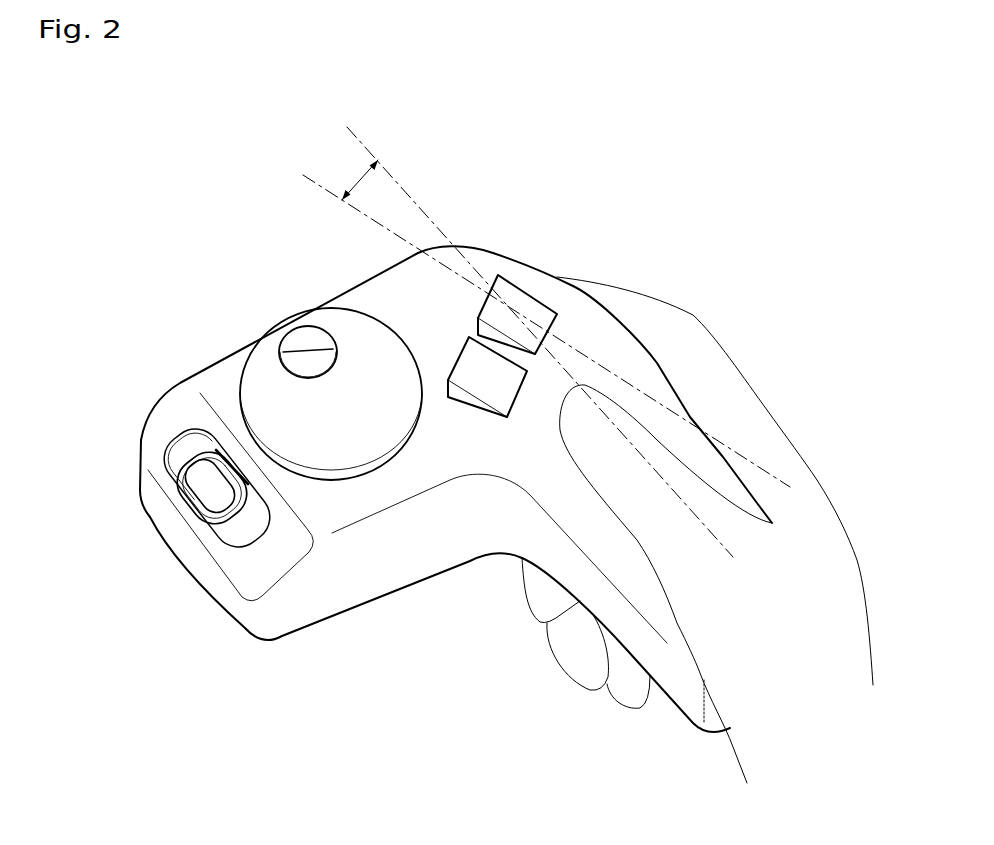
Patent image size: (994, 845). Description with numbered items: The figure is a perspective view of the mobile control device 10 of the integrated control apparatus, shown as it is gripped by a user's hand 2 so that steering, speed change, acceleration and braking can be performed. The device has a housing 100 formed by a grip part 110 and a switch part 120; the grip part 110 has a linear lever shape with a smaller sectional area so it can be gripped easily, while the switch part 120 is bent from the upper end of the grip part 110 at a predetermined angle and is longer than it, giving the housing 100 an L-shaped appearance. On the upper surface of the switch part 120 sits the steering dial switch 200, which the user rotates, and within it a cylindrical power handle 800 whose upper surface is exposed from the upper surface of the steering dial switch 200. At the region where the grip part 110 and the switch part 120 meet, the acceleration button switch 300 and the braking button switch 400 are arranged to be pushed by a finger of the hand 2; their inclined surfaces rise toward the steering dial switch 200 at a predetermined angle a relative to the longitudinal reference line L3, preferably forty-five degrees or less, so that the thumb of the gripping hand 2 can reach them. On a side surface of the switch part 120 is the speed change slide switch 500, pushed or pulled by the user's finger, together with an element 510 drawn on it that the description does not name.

The user's hand 2 is at (828, 527).
The mobile control device 10 is at (224, 351).
The housing 100 is at (356, 618).
The grip part 110 is at (665, 678).
The switch part 120 is at (207, 380).
The steering dial switch 200 is at (267, 412).
The acceleration button switch 300 is at (483, 380).
The braking button switch 400 is at (522, 302).
The speed change slide switch 500 is at (192, 515).
The switch stem 510 is at (210, 487).
The power handle 800 is at (307, 336).
The longitudinal reference line L3 is at (546, 343).
The predetermined angle a is at (360, 176).